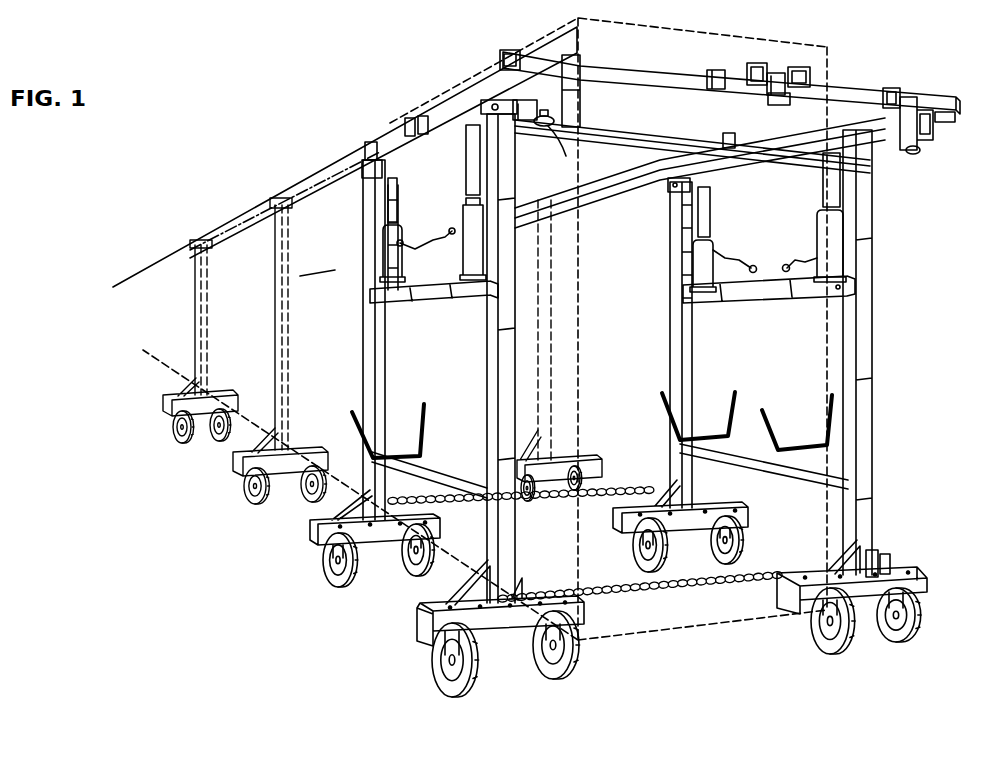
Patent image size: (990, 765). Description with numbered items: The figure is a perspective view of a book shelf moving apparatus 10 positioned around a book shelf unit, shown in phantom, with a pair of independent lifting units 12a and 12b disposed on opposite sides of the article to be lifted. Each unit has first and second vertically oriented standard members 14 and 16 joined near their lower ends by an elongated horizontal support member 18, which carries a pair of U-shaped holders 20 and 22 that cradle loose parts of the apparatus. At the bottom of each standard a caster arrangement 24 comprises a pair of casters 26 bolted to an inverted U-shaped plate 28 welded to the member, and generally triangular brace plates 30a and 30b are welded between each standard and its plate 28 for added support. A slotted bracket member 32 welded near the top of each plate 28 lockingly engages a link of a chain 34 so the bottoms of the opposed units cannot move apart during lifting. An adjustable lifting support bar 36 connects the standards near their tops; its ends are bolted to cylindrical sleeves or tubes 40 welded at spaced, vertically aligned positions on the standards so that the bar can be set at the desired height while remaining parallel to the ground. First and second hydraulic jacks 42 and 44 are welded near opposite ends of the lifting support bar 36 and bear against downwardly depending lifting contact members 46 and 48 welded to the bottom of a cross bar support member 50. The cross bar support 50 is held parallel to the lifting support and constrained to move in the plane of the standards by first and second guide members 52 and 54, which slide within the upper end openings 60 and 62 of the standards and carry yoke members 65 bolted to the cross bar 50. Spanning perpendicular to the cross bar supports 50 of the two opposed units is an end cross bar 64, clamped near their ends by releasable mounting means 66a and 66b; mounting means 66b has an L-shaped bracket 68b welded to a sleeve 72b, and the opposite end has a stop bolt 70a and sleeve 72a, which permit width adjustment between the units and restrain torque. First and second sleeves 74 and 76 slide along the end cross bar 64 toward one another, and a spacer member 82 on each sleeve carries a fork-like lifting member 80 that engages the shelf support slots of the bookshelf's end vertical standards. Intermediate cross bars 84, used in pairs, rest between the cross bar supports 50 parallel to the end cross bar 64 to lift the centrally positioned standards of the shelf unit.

The book shelf moving apparatus 10 is at (183, 214).
The lifting unit 12a is at (443, 393).
The lifting unit 12b is at (786, 372).
The first vertically oriented standard member 14 is at (366, 346).
The second vertically oriented standard member 16 is at (488, 369).
The elongated horizontal support member 18 is at (478, 500).
The U-shaped holder 20 is at (732, 392).
The U-shaped holder 22 is at (828, 410).
The caster arrangement 24 is at (696, 652).
The caster 26 is at (452, 696).
The inverted U-shaped plate 28 is at (420, 637).
The triangular brace plate 30a is at (448, 589).
The triangular brace plate 30b is at (528, 578).
The slotted bracket member 32 is at (895, 562).
The chain 34 is at (720, 590).
The adjustable lifting support bar 36 is at (433, 296).
The cylindrical sleeve or tube 40 is at (385, 242).
The first hydraulic jack 42 is at (404, 242).
The second hydraulic jack 44 is at (468, 212).
The lifting contact member 46 is at (398, 182).
The lifting contact member 48 is at (466, 168).
The cross bar support member 50 is at (394, 147).
The first guide member 52 is at (364, 164).
The second guide member 54 is at (526, 122).
The upper end opening 60 is at (370, 160).
The upper end opening 62 is at (482, 130).
The end cross bar 64 is at (855, 94).
The yoke member 65 is at (495, 107).
The releasable mounting means 66a is at (592, 103).
The releasable mounting means 66b is at (945, 128).
The bracket 68b is at (906, 150).
The stop bolt 70a is at (573, 138).
The sleeve 72a is at (598, 63).
The sleeve 72b is at (900, 92).
The first sleeve 74 is at (712, 70).
The second sleeve 76 is at (777, 106).
The lifting member 80 is at (770, 96).
The spacer member 82 is at (750, 63).
The intermediate cross bar 84 is at (413, 116).